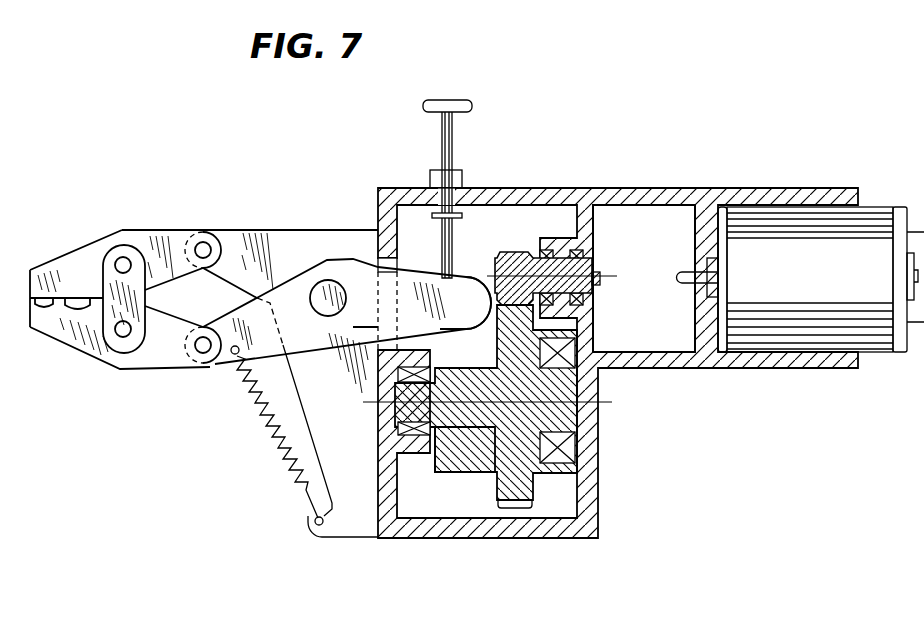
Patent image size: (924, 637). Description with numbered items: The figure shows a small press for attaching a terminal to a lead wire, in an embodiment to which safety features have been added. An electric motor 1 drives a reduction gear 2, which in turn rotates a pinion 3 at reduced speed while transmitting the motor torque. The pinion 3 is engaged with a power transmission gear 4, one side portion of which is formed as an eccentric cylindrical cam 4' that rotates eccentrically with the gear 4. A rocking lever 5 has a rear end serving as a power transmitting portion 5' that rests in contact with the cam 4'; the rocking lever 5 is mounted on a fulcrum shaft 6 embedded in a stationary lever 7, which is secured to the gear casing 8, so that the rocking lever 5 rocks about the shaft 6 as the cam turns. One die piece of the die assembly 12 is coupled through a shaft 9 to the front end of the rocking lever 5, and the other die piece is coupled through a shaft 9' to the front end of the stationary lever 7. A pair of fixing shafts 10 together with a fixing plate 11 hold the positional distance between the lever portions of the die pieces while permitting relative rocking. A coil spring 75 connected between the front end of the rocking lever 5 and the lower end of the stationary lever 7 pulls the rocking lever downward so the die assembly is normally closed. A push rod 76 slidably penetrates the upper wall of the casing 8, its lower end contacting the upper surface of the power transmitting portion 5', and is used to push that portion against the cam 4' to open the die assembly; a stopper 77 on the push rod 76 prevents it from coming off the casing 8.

The electric motor 1 is at (800, 250).
The reduction gear 2 is at (635, 240).
The pinion 3 is at (515, 258).
The power transmission gear 4 is at (487, 407).
The eccentric cylindrical cam 4' is at (457, 468).
The rocking lever 5 is at (260, 278).
The power transmitting portion 5' is at (452, 283).
The fulcrum shaft 6 is at (327, 288).
The stationary lever 7 is at (278, 240).
The gear casing 8 is at (558, 530).
The shaft 9 is at (203, 367).
The shaft 9' is at (203, 228).
The fixing shafts 10 is at (125, 258).
The fixing plate 11 is at (100, 275).
The die assembly 12 is at (60, 229).
The coil spring 75 is at (262, 428).
The push rod 76 is at (447, 130).
The stopper 77 is at (433, 215).